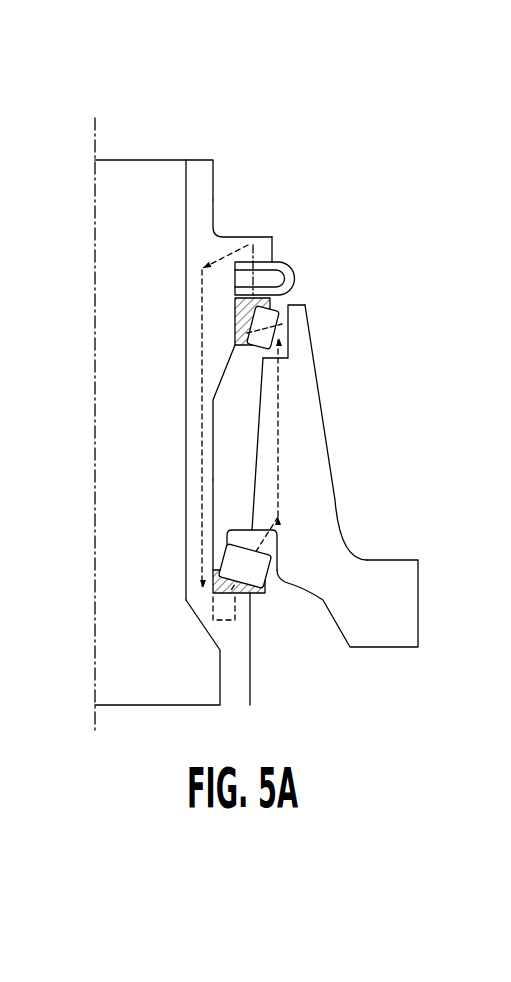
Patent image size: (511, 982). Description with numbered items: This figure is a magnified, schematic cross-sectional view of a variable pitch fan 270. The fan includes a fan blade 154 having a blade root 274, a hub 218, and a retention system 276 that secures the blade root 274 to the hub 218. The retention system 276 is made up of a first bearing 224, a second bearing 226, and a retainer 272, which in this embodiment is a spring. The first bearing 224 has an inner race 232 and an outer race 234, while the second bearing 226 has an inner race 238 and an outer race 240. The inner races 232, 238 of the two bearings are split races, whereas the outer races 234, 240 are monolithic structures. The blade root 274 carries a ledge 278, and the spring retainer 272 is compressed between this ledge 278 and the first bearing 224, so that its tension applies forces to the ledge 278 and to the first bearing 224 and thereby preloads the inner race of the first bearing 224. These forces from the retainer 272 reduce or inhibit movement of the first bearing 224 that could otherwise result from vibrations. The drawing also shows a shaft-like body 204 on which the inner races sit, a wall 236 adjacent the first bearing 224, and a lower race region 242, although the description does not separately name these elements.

The variable pitch fan 270 is at (75, 130).
The fan blade 154 is at (200, 180).
The ledge 278 is at (268, 237).
The retention system 276 is at (295, 238).
The retainer 272 is at (283, 287).
The inner race 232 is at (237, 328).
The outer race 234 is at (280, 328).
The first bearing 224 is at (283, 343).
The first bearing support wall 236 is at (260, 338).
The shaft 204 is at (313, 418).
The hub 218 is at (388, 605).
The outer race 240 is at (260, 550).
The second outer race 242 is at (238, 570).
The second bearing 226 is at (265, 587).
The inner race 238 is at (225, 575).
The blade root 274 is at (235, 678).